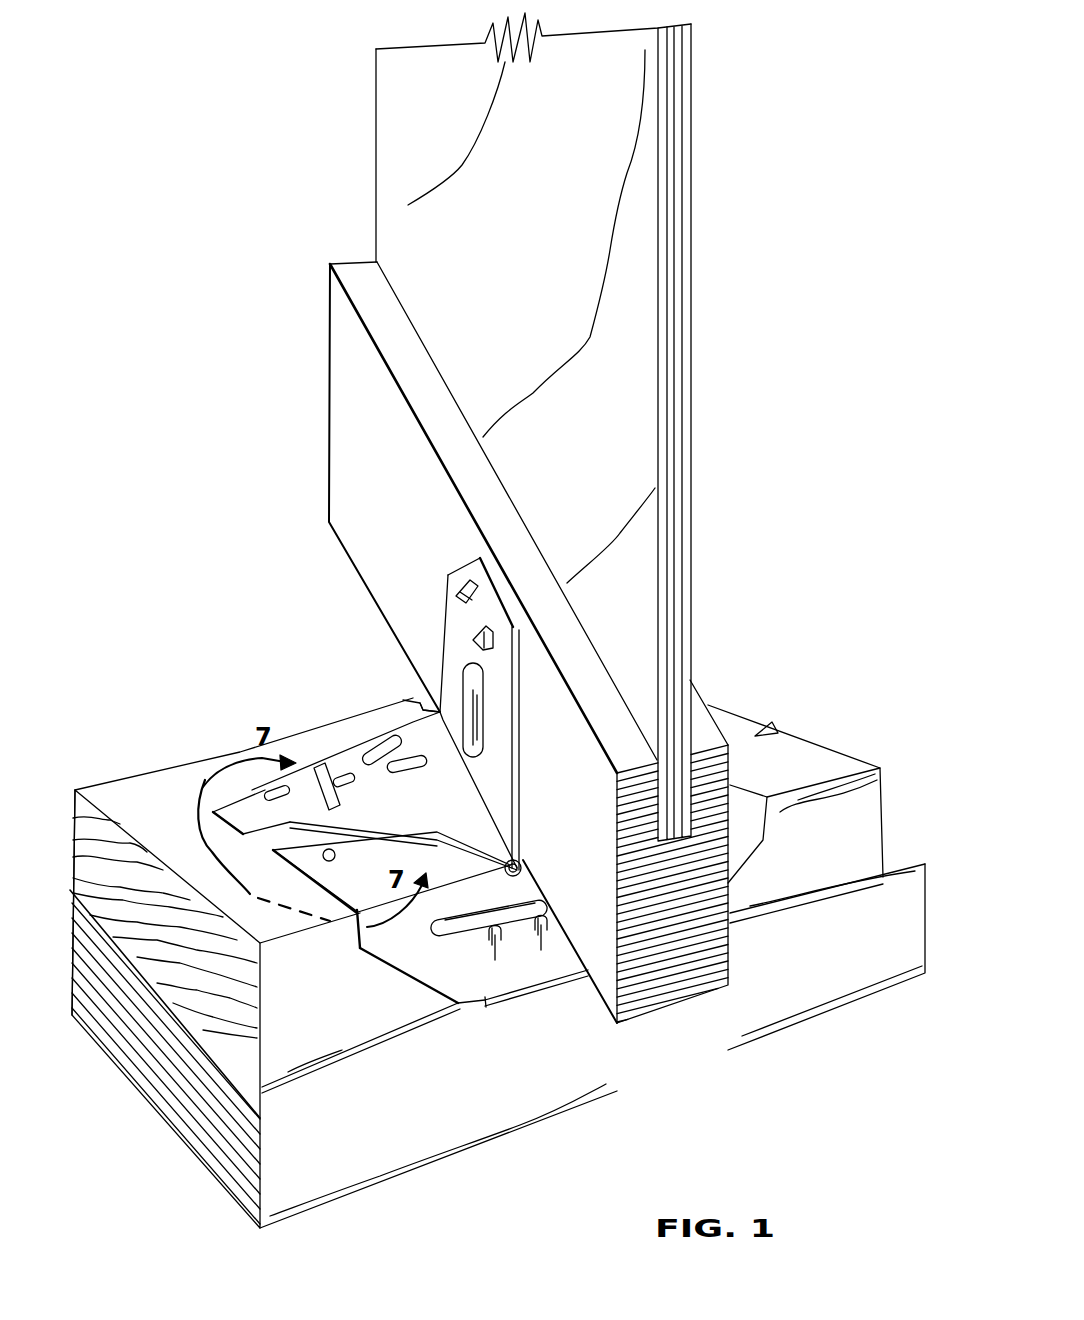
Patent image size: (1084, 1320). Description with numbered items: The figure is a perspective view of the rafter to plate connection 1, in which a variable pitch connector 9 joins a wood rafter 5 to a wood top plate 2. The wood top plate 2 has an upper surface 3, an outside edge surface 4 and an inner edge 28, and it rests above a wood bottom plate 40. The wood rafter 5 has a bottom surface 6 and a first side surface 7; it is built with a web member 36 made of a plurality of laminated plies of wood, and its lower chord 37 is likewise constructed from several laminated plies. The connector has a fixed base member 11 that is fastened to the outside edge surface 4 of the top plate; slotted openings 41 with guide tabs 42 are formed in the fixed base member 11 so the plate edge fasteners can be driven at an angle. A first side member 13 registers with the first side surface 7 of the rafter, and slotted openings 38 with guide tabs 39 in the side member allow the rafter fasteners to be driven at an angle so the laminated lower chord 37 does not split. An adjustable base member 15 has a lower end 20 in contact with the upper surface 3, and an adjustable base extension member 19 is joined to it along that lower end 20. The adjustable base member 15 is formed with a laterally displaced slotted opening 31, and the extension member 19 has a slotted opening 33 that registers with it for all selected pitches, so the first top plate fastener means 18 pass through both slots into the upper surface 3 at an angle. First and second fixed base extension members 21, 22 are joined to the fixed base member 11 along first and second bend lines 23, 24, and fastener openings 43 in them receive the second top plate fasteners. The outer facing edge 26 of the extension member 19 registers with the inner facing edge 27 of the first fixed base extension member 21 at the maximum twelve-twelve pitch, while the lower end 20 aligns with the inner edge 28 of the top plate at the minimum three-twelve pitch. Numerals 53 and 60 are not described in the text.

The rafter to plate connection 1 is at (296, 672).
The wood top plate 2 is at (495, 963).
The upper surface 3 is at (162, 819).
The outside edge surface 4 is at (302, 1023).
The wood rafter 5 is at (429, 517).
The bottom surface 6 is at (341, 545).
The first side surface 7 is at (373, 427).
The variable pitch connector 9 is at (478, 993).
The fixed base member 11 is at (475, 1051).
The first side member 13 is at (479, 742).
The adjustable base member 15 is at (425, 717).
The first top plate fastener means 18 is at (337, 787).
The adjustable base extension member 19 is at (365, 750).
The lower end 20 is at (315, 793).
The first fixed base extension member 21 is at (397, 911).
The second fixed base extension member 22 is at (742, 783).
The first bend line 23 is at (506, 862).
The second bend line 24 is at (738, 798).
The outer facing edge 26 is at (220, 855).
The inner facing edge 27 is at (289, 915).
The inner edge 28 is at (75, 800).
The slotted opening 31 is at (333, 765).
The slotted opening 33 is at (340, 806).
The web member 36 is at (693, 237).
The lower chord 37 is at (718, 990).
The slotted openings 38 is at (483, 628).
The guide tabs 39 is at (456, 596).
The wood bottom plate 40 is at (260, 1124).
The slotted openings 41 is at (520, 935).
The guide tabs 42 is at (495, 962).
The fastener openings 43 is at (329, 862).
The edge of plate 53 is at (392, 713).
The slot 60 is at (478, 718).